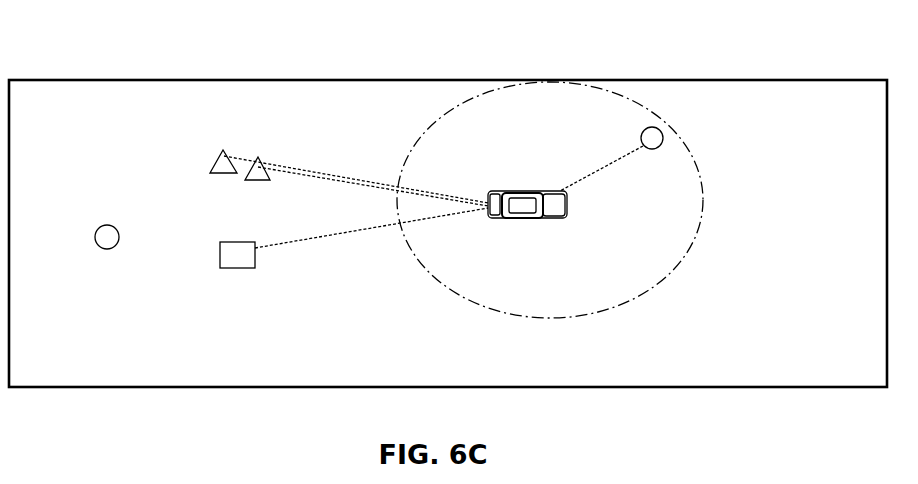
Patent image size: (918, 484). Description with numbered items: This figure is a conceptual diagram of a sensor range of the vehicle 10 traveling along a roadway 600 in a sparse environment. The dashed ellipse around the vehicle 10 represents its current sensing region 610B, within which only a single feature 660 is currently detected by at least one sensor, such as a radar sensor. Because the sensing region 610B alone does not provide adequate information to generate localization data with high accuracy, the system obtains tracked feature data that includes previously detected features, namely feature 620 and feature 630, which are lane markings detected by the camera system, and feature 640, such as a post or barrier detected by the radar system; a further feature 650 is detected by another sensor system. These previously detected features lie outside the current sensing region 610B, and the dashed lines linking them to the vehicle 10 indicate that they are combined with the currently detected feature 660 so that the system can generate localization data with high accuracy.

The roadway 600 is at (771, 177).
The sensing region 610B is at (628, 303).
The vehicle 10 is at (513, 191).
The feature 620 is at (227, 160).
The feature 630 is at (262, 163).
The feature 640 is at (230, 260).
The feature 650 is at (100, 246).
The feature 660 is at (654, 128).